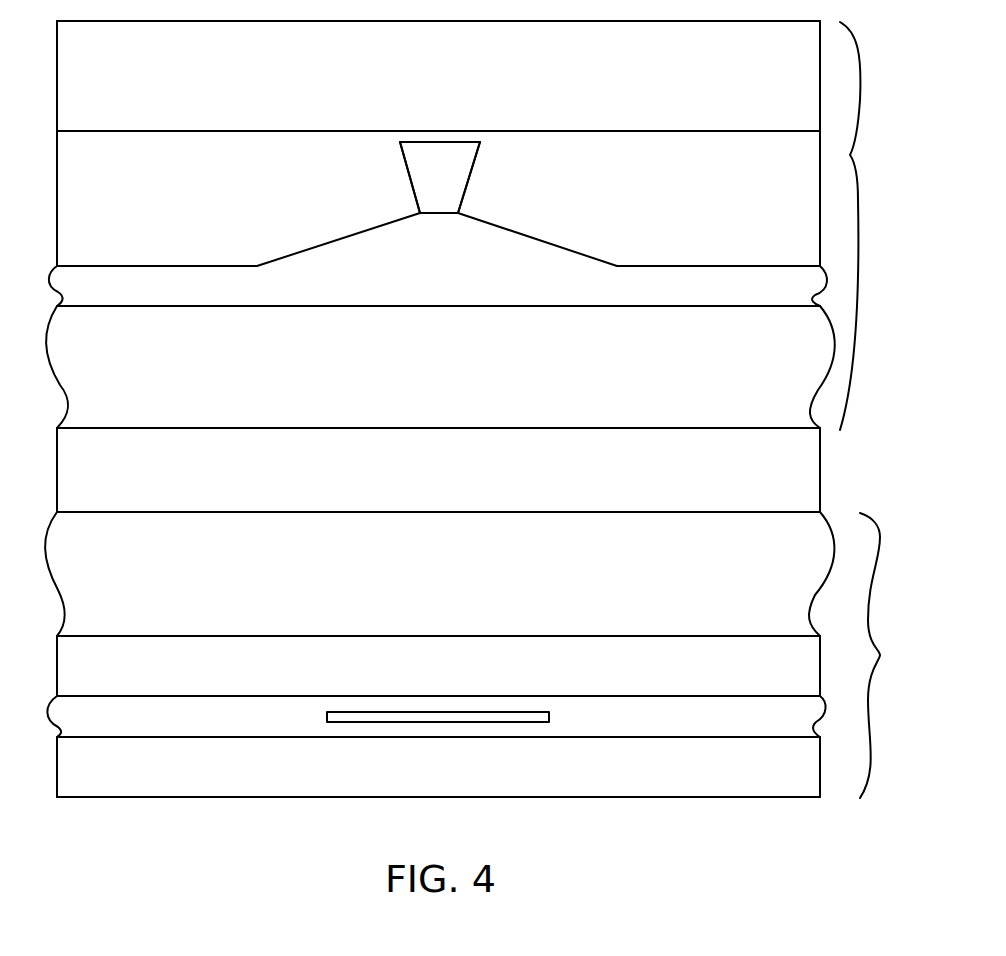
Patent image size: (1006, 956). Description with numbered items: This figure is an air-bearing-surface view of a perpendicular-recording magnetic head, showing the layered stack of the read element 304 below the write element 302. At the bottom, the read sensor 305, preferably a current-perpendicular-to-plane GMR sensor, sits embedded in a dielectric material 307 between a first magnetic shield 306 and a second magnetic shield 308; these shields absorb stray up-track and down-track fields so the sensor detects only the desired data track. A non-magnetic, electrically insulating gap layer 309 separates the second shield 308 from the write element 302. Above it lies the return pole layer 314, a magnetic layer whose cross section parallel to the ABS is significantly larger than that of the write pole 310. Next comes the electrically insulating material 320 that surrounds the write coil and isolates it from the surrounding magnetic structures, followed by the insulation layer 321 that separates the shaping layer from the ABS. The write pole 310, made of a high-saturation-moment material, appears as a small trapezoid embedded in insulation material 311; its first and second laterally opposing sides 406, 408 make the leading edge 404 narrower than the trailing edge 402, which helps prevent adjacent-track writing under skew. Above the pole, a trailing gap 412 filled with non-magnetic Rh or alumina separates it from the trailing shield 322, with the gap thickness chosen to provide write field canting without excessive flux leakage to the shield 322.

The write element 302 is at (850, 155).
The read element 304 is at (880, 537).
The read sensor 305 is at (327, 716).
The first magnetic shield 306 is at (385, 766).
The dielectric material 307 is at (700, 716).
The second magnetic shield 308 is at (388, 664).
The gap layer 309 is at (385, 580).
The write pole 310 is at (440, 188).
The insulation material 311 is at (180, 180).
The return pole layer 314 is at (385, 470).
The electrically insulating material 320 is at (385, 372).
The insulation layer 321 is at (590, 287).
The trailing shield 322 is at (706, 60).
The trailing edge 402 is at (449, 142).
The leading edge 404 is at (432, 214).
The first laterally opposing side 406 is at (470, 175).
The second laterally opposing side 408 is at (411, 182).
The trailing gap 412 is at (418, 137).